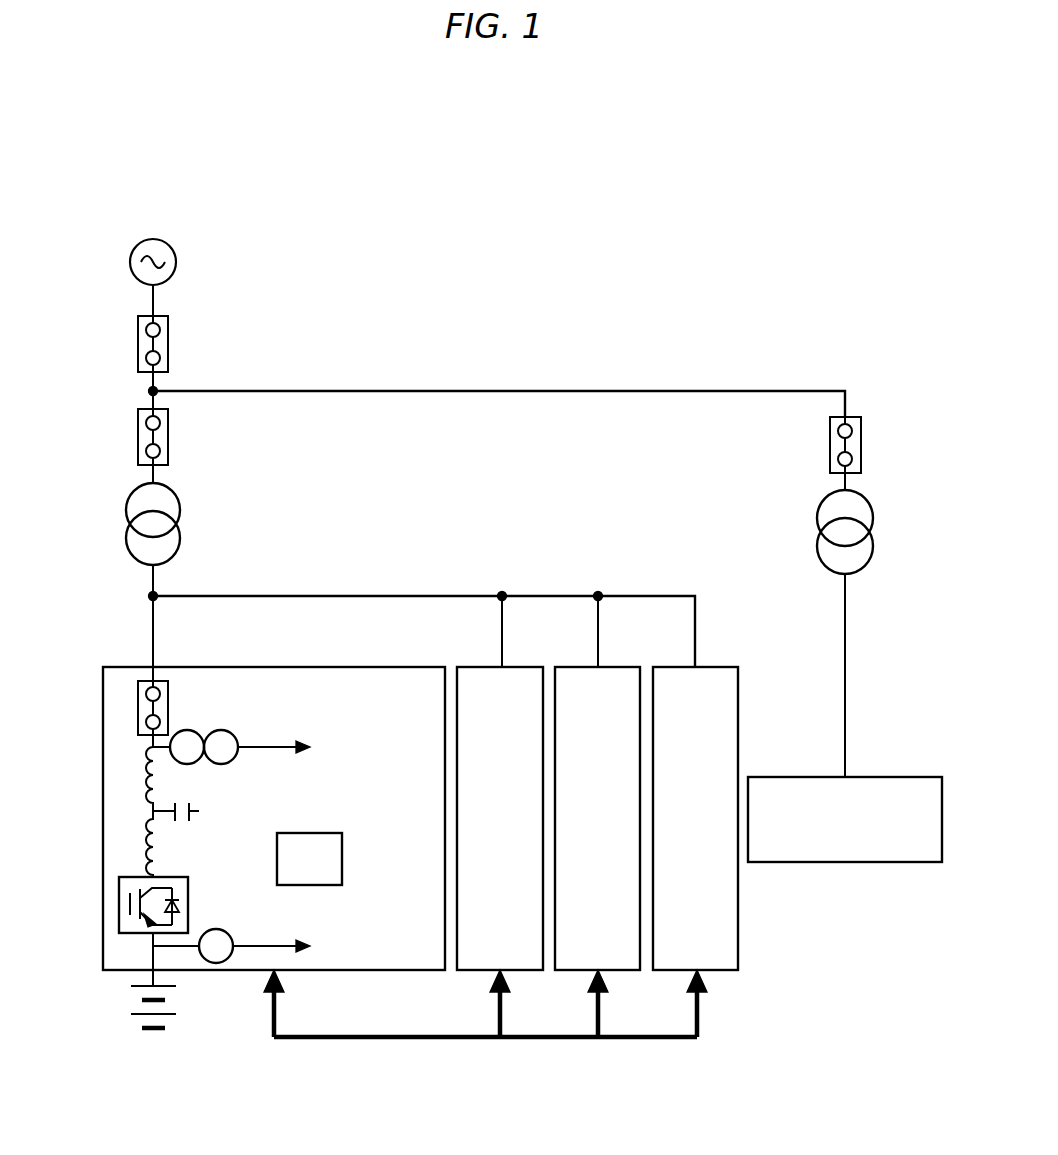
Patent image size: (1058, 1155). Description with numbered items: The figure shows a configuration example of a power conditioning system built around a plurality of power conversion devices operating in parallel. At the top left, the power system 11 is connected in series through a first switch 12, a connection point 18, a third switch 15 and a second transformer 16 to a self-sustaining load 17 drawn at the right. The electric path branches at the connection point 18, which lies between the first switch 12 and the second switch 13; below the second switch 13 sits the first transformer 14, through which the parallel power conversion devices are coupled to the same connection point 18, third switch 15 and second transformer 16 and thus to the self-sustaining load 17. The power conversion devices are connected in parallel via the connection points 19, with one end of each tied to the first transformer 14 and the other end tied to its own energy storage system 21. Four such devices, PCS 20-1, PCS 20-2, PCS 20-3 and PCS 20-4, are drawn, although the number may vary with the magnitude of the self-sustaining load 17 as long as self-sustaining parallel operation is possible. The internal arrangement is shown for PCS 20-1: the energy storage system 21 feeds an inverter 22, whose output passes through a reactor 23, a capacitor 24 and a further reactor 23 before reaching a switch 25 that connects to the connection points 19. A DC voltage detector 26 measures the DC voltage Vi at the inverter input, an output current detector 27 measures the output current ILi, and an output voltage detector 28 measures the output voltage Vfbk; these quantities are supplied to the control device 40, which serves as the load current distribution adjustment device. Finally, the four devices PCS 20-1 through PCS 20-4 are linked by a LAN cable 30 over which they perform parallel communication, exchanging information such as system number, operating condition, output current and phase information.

The power system 11 is at (176, 262).
The first switch 12 is at (168, 337).
The second switch 13 is at (168, 430).
The first transformer 14 is at (180, 507).
The third switch 15 is at (830, 447).
The second transformer 16 is at (816, 521).
The self-sustaining load 17 is at (845, 862).
The connection point 18 is at (150, 391).
The connection points 19 is at (150, 596).
The PCS No. 1 20-1 is at (300, 667).
The PCS No. 2 20-2 is at (518, 667).
The PCS No. 3 20-3 is at (620, 667).
The PCS No. 4 20-4 is at (726, 667).
The energy storage system 21 is at (136, 1006).
The inverter 22 is at (119, 903).
The reactor 23 is at (144, 776).
The capacitor 24 is at (185, 825).
The switch 25 is at (138, 710).
The DC voltage detector 26 is at (213, 929).
The output current detector 27 is at (187, 730).
The output voltage detector 28 is at (234, 736).
The LAN cable 30 is at (307, 1040).
The control device 40 is at (309, 859).